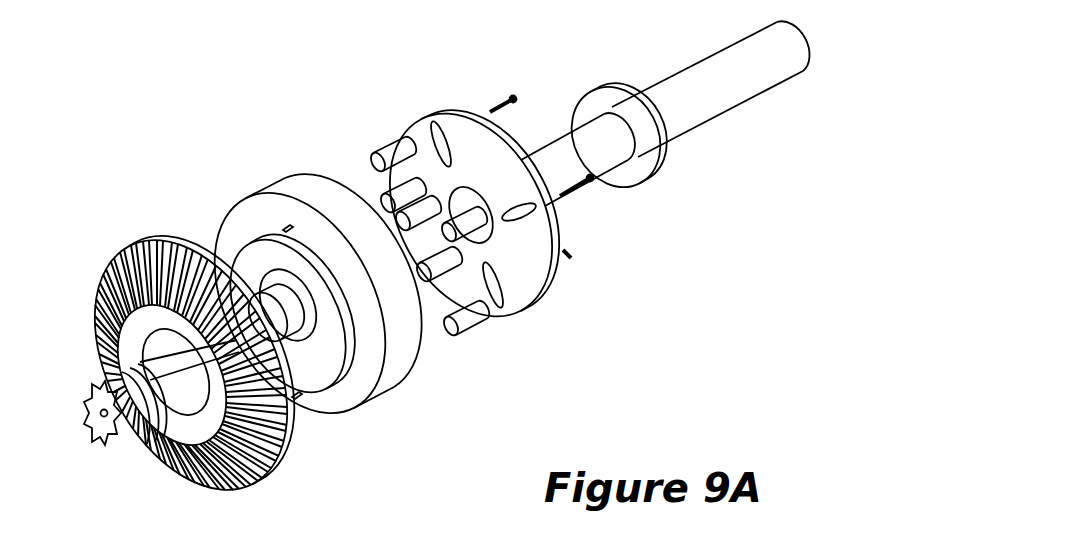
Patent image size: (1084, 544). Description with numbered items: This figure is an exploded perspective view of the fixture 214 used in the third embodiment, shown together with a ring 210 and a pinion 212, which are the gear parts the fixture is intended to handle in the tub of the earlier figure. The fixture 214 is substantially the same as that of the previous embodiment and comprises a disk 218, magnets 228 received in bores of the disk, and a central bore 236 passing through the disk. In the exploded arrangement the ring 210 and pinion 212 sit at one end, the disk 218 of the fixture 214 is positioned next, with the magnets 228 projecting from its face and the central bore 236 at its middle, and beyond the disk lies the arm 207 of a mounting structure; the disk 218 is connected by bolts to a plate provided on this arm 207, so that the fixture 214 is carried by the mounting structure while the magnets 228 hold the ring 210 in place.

The arm 207 is at (737, 107).
The ring 210 is at (275, 470).
The pinion 212 is at (132, 436).
The fixture 214 is at (680, 295).
The disk 218 is at (282, 190).
The magnets 228 is at (383, 138).
The central bore 236 is at (305, 397).